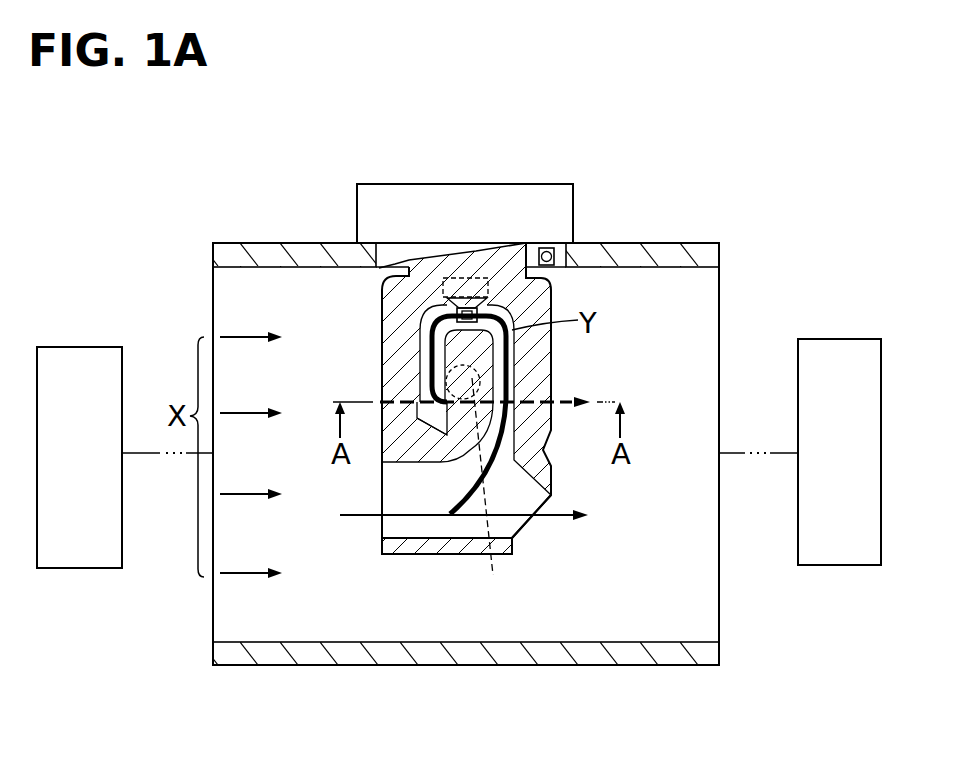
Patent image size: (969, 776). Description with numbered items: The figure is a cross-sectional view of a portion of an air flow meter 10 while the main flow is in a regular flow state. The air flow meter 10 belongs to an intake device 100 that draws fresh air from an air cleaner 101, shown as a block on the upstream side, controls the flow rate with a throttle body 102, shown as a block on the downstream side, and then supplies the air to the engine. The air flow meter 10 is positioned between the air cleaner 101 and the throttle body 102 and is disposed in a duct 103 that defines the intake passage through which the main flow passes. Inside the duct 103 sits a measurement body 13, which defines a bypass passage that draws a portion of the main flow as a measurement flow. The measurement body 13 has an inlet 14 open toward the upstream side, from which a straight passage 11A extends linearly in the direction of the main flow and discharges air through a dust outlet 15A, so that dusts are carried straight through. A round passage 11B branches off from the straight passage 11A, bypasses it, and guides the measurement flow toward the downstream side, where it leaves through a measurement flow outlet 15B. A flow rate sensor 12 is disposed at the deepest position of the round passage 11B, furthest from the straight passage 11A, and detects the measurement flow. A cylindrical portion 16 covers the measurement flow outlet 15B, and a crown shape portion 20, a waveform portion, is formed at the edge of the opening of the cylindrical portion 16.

The intake device 100 is at (489, 389).
The air cleaner 101 is at (82, 347).
The throttle body 102 is at (826, 339).
The duct 103 is at (272, 243).
The air flow meter 10 is at (493, 176).
The flow rate sensor 12 is at (466, 306).
The measurement body 13 is at (381, 308).
The inlet 14 is at (381, 488).
The straight passage 11A is at (395, 528).
The round passage 11B is at (514, 370).
The dust outlet 15A is at (525, 520).
The measurement flow outlet 15B is at (432, 388).
The cylindrical portion 16 is at (443, 433).
The crown shape portion 20 is at (476, 487).